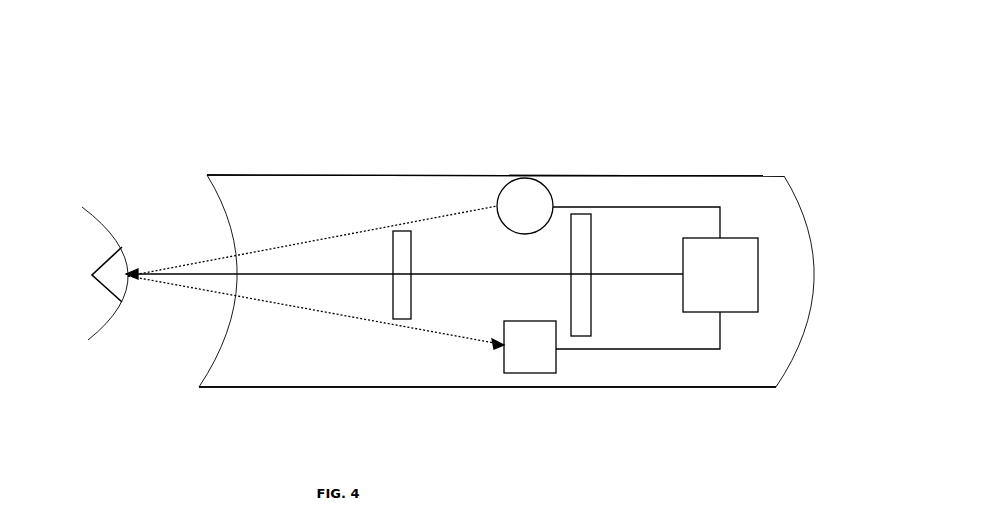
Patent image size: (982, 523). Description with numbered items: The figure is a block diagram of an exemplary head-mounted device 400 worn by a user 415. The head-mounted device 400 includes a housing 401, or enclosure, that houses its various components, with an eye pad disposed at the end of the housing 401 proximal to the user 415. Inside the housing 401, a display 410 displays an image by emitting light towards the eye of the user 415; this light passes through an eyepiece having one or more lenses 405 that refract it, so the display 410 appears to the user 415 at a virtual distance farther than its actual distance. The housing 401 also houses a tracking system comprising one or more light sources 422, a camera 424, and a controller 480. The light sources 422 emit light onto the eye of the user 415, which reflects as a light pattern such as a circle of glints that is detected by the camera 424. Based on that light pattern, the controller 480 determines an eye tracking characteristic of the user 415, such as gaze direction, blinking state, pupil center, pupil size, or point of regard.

The head-mounted device 400 is at (257, 98).
The housing 401 is at (633, 387).
The user 415 is at (86, 190).
The lenses 405 is at (403, 230).
The light sources 422 is at (520, 177).
The display 410 is at (593, 263).
The controller 480 is at (758, 280).
The camera 424 is at (530, 373).